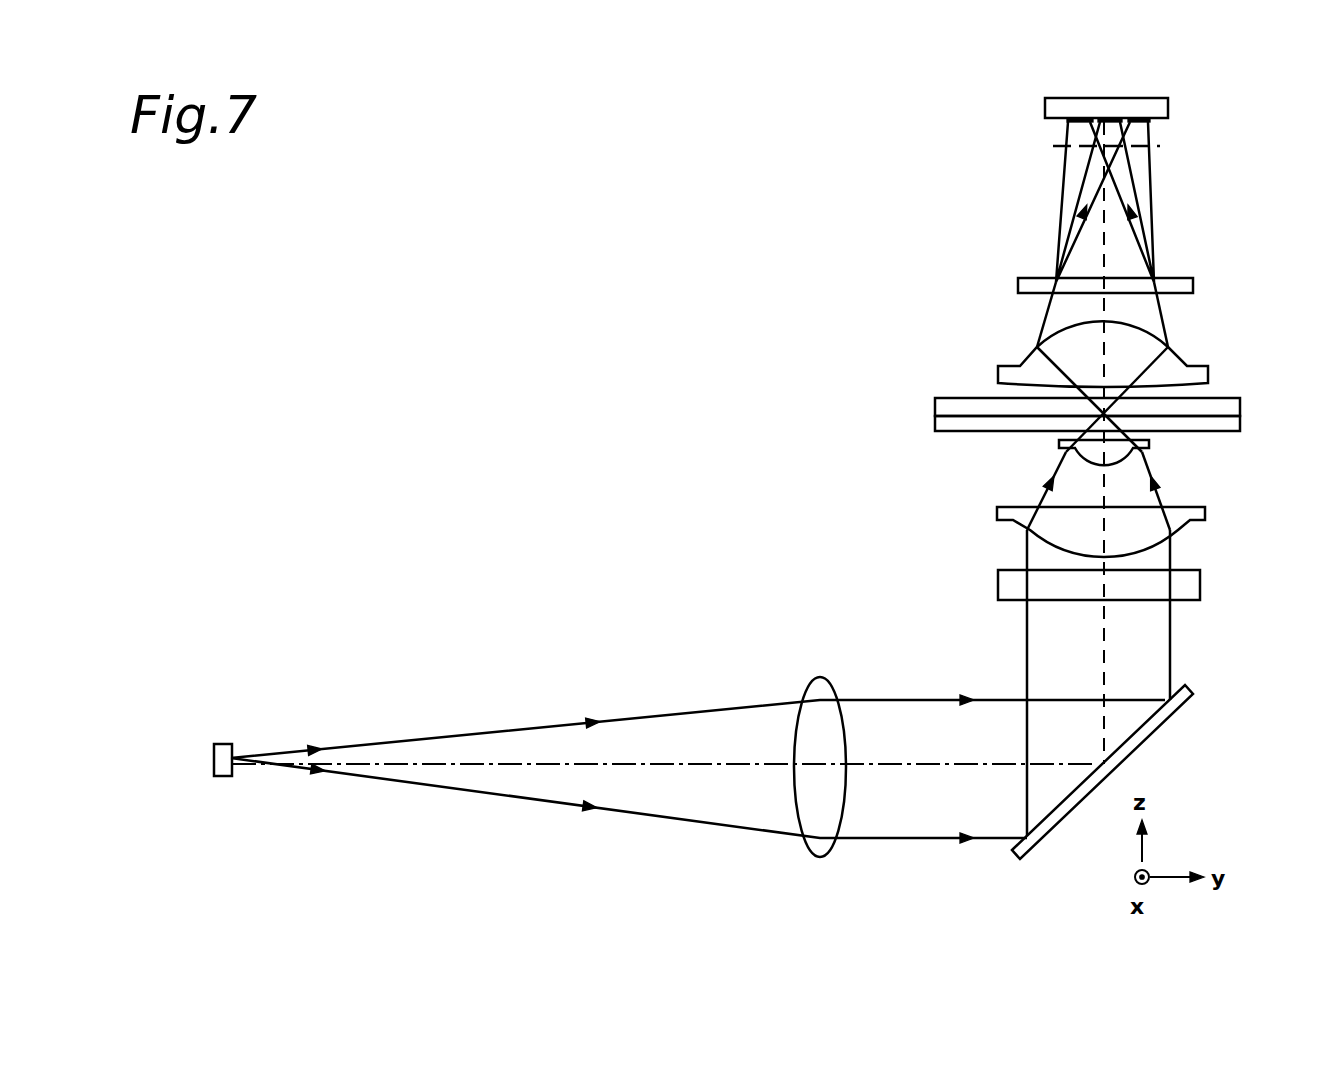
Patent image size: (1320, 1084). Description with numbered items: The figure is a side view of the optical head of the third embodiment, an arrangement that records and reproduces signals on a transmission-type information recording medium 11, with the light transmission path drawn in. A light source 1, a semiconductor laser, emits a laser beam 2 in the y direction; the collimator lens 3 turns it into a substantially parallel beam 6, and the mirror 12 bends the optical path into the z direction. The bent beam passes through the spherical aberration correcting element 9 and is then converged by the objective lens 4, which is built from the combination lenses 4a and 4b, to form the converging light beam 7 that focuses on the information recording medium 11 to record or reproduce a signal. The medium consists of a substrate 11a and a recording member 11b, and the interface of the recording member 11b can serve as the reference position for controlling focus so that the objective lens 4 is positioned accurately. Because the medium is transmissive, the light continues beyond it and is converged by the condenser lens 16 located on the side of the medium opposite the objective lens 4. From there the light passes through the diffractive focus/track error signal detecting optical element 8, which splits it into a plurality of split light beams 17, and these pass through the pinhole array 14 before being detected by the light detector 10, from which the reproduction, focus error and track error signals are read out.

The light source 1 is at (222, 766).
The laser beam 2 is at (525, 738).
The collimator lens 3 is at (822, 690).
The objective lens 4 is at (1045, 499).
The combination lens 4a is at (1066, 452).
The combination lens 4b is at (1055, 523).
The parallel beam 6 is at (1133, 670).
The converging light beam 7 is at (1110, 482).
The focus/track error signal detecting optical element 8 is at (1173, 290).
The spherical aberration correcting element 9 is at (1178, 588).
The light detector 10 is at (1150, 123).
The information recording medium 11 is at (983, 425).
The substrate 11a is at (958, 403).
The recording member 11b is at (972, 423).
The mirror 12 is at (1127, 750).
The pinhole array 14 is at (1150, 147).
The condenser lens 16 is at (1175, 360).
The split light beams 17 is at (1113, 197).